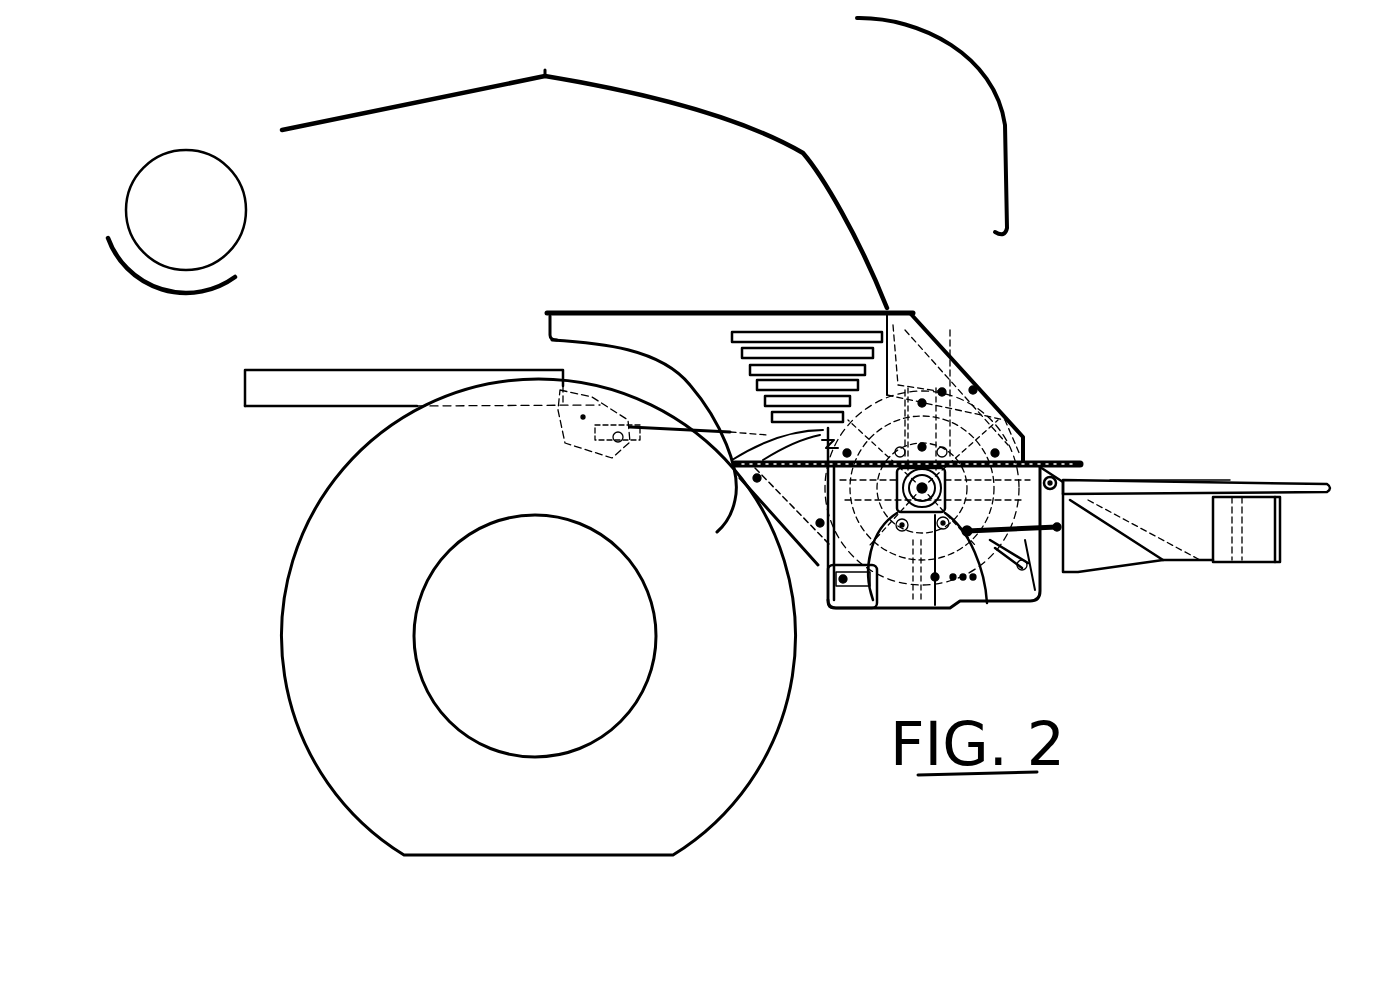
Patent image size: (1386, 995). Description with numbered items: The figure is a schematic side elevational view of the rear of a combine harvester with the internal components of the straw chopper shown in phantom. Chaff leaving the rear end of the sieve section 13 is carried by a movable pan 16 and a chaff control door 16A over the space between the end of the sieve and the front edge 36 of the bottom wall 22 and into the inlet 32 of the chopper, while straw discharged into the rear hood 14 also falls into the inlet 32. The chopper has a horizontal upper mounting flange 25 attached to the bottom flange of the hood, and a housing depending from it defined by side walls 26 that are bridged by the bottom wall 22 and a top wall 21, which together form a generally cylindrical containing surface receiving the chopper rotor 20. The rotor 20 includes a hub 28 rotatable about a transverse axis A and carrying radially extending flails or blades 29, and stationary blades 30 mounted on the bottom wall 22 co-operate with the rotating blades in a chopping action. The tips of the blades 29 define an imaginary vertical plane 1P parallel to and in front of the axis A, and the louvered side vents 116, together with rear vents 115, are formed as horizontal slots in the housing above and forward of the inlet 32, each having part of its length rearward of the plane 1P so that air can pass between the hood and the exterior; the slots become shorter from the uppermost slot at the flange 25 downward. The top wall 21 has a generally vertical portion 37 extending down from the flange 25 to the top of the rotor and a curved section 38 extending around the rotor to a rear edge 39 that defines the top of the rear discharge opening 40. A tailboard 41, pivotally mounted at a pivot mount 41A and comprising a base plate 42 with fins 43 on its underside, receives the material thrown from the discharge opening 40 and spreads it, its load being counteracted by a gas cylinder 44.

The sieve section 13 is at (382, 387).
The rear hood 14 is at (1013, 387).
The movable pan 16 is at (655, 440).
The chaff control door 16A is at (777, 487).
The imaginary vertical plane 1P is at (820, 475).
The chopper rotor 20 is at (883, 613).
The top wall 21 is at (990, 413).
The bottom wall 22 is at (980, 590).
The horizontal upper mounting flange 25 is at (750, 313).
The side walls 26 is at (703, 362).
The hub 28 is at (935, 577).
The flails or blades 29 is at (1027, 570).
The stationary blades 30 is at (853, 608).
The inlet 32 is at (740, 478).
The front edge 36 is at (810, 543).
The generally vertical portion 37 is at (910, 350).
The curved section 38 is at (947, 390).
The rear edge 39 is at (1047, 478).
The rear discharge opening 40 is at (1052, 540).
The tailboard 41 is at (1226, 455).
The pivot mount 41A is at (1087, 480).
The base plate 42 is at (1237, 488).
The fins 43 is at (1253, 523).
The gas cylinder 44 is at (1037, 573).
The rear vents 115 is at (887, 297).
The side vents 116 is at (793, 340).
The axis A is at (860, 607).